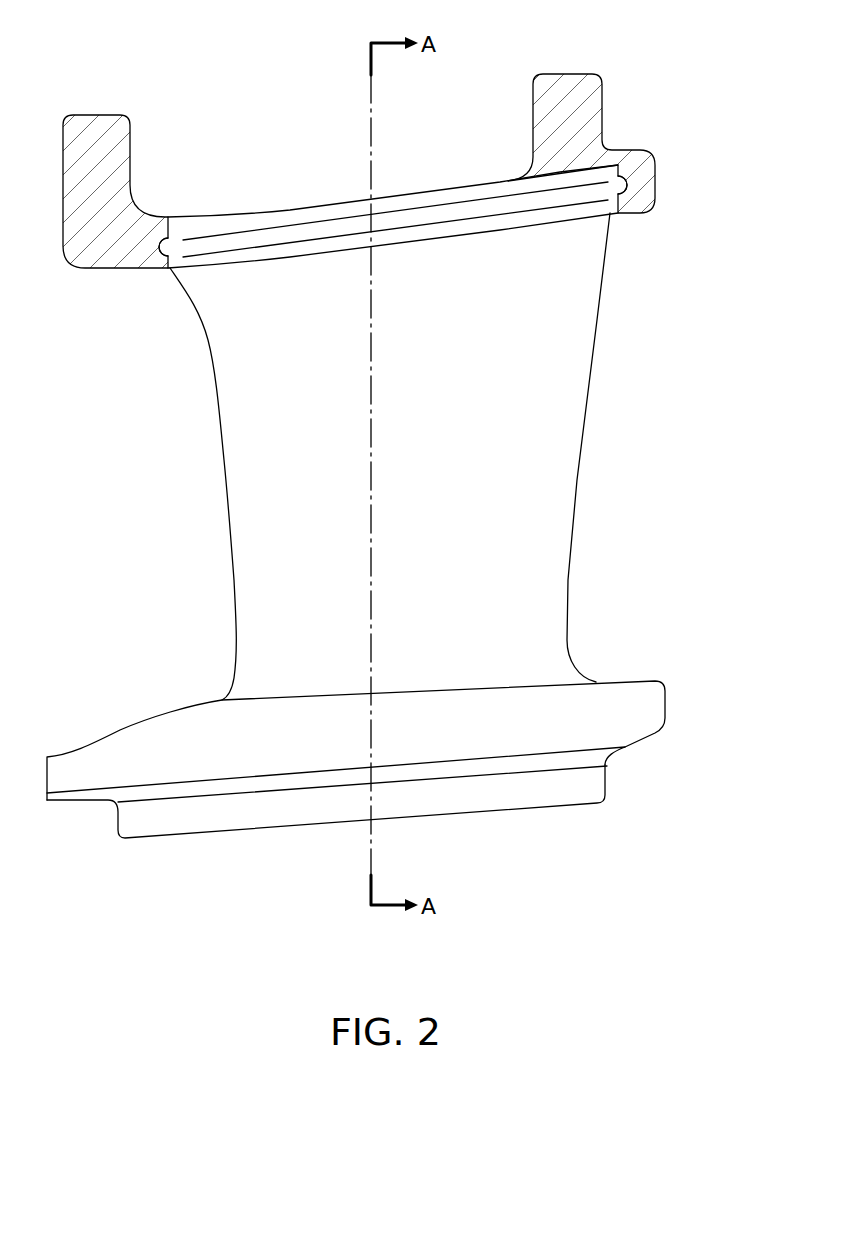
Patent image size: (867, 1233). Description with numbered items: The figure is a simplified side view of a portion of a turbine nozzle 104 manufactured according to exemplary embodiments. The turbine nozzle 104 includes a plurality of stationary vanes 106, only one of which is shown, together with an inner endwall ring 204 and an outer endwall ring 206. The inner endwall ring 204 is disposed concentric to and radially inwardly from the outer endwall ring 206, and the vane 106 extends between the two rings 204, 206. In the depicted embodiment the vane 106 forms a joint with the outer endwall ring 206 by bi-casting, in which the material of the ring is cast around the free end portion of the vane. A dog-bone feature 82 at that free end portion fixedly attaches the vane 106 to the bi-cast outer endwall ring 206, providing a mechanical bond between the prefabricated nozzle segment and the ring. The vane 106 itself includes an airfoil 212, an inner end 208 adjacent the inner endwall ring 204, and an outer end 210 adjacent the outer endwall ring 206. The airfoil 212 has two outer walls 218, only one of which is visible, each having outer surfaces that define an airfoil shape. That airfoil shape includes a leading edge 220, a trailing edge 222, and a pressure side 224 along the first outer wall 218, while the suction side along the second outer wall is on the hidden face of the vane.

The turbine nozzle 104 is at (252, 94).
The stationary vane 106 is at (406, 456).
The dog-bone feature 82 is at (152, 262).
The inner endwall ring 204 is at (614, 758).
The outer endwall ring 206 is at (655, 148).
The inner end 208 is at (487, 686).
The outer end 210 is at (403, 243).
The airfoil 212 is at (266, 601).
The outer wall 218 is at (556, 339).
The leading edge 220 is at (226, 489).
The trailing edge 222 is at (567, 627).
The pressure side 224 is at (462, 569).